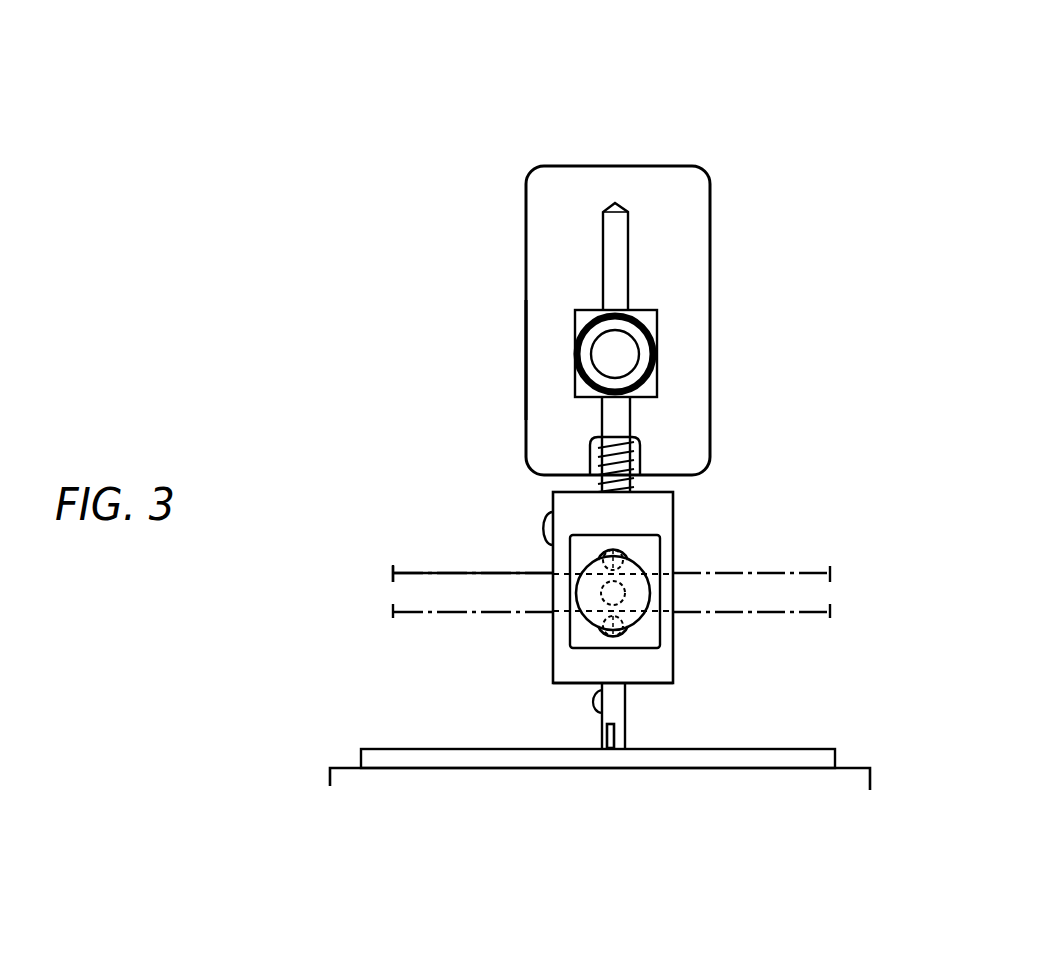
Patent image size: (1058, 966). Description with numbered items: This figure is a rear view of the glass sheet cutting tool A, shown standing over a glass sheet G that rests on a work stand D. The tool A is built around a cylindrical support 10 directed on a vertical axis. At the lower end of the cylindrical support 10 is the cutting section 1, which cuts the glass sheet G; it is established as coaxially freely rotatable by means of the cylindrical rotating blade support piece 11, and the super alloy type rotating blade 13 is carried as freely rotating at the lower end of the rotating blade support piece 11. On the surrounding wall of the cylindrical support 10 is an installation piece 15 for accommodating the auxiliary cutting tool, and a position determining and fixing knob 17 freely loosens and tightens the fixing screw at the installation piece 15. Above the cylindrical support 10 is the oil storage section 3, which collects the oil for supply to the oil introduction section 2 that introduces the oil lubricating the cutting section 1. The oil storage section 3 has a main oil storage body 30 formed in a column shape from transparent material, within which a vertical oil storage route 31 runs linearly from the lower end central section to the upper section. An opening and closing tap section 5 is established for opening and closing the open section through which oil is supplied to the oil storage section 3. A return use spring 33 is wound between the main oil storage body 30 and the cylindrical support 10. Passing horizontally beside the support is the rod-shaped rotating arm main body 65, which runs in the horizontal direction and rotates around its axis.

The glass sheet cutting tool A is at (676, 104).
The main oil storage body 30 is at (565, 181).
The vertical oil storage route 31 is at (628, 224).
The oil storage section 3 is at (724, 277).
The opening and closing tap section 5 is at (562, 330).
The oil introduction section 2 is at (636, 421).
The return use spring 33 is at (640, 482).
The cylindrical support 10 is at (650, 511).
The installation piece 15 is at (648, 633).
The rotating arm main body 65 is at (460, 580).
The position determining and fixing knob 17 is at (586, 602).
The cutting section 1 is at (692, 692).
The rotating blade support piece 11 is at (627, 712).
The rotating blade 13 is at (600, 740).
The glass sheet G is at (390, 752).
The work stand D is at (349, 768).